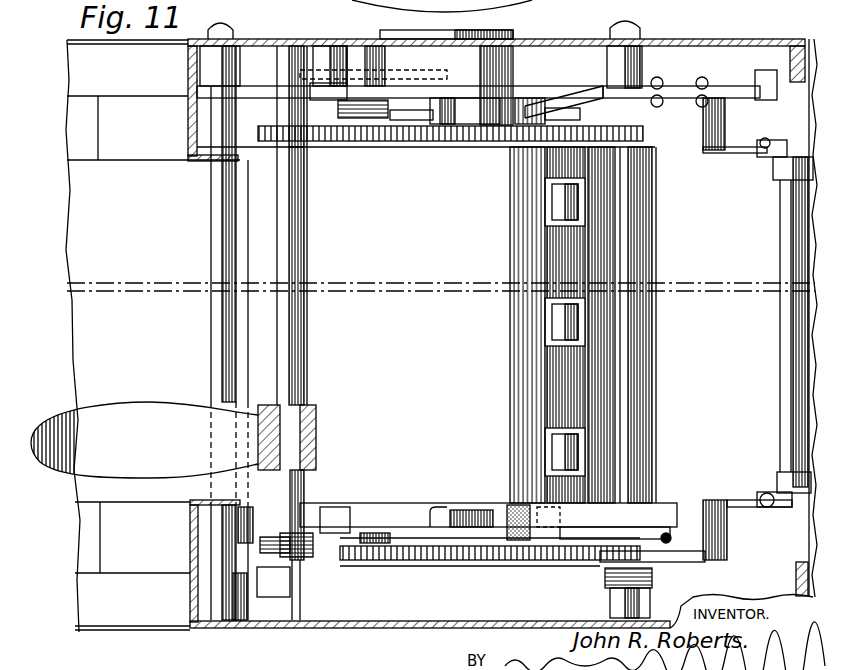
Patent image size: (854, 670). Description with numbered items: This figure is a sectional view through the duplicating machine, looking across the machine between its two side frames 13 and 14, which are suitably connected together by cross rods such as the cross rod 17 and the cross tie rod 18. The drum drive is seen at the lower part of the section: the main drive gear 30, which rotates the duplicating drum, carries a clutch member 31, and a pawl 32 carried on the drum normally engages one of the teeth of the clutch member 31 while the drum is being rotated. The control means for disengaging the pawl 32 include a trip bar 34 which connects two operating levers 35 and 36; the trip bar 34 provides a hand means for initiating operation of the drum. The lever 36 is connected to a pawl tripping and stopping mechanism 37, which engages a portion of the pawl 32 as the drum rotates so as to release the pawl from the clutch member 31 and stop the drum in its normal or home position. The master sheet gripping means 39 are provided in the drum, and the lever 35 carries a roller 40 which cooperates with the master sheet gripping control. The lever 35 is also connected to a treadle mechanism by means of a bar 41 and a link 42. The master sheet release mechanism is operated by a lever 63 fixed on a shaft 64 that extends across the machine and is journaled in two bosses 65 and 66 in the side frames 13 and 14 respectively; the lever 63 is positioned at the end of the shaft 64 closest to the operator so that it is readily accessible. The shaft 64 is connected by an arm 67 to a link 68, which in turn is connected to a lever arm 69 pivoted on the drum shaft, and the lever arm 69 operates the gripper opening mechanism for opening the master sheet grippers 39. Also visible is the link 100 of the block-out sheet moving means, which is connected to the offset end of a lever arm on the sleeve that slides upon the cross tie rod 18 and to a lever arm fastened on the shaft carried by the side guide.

The side frame 13 is at (243, 39).
The side frame 14 is at (367, 628).
The cross rod 17 is at (221, 270).
The cross rod 18 is at (636, 263).
The main drive gear 30 is at (383, 563).
The clutch member 31 is at (420, 530).
The pawl 32 is at (358, 522).
The trip bar 34 is at (783, 315).
The operating lever 35 is at (605, 97).
The operating lever 36 is at (675, 100).
The pawl tripping and stopping mechanism 37 is at (600, 540).
The master sheet gripping means 39 is at (553, 208).
The roller 40 is at (592, 72).
The bar 41 is at (727, 84).
The link 42 is at (755, 95).
The lever 63 is at (160, 384).
The shaft 64 is at (301, 270).
The boss 65 is at (294, 46).
The boss 66 is at (297, 614).
The arm 67 is at (310, 98).
The link 68 is at (472, 76).
The lever arm 69 is at (523, 96).
The link 100 is at (600, 385).